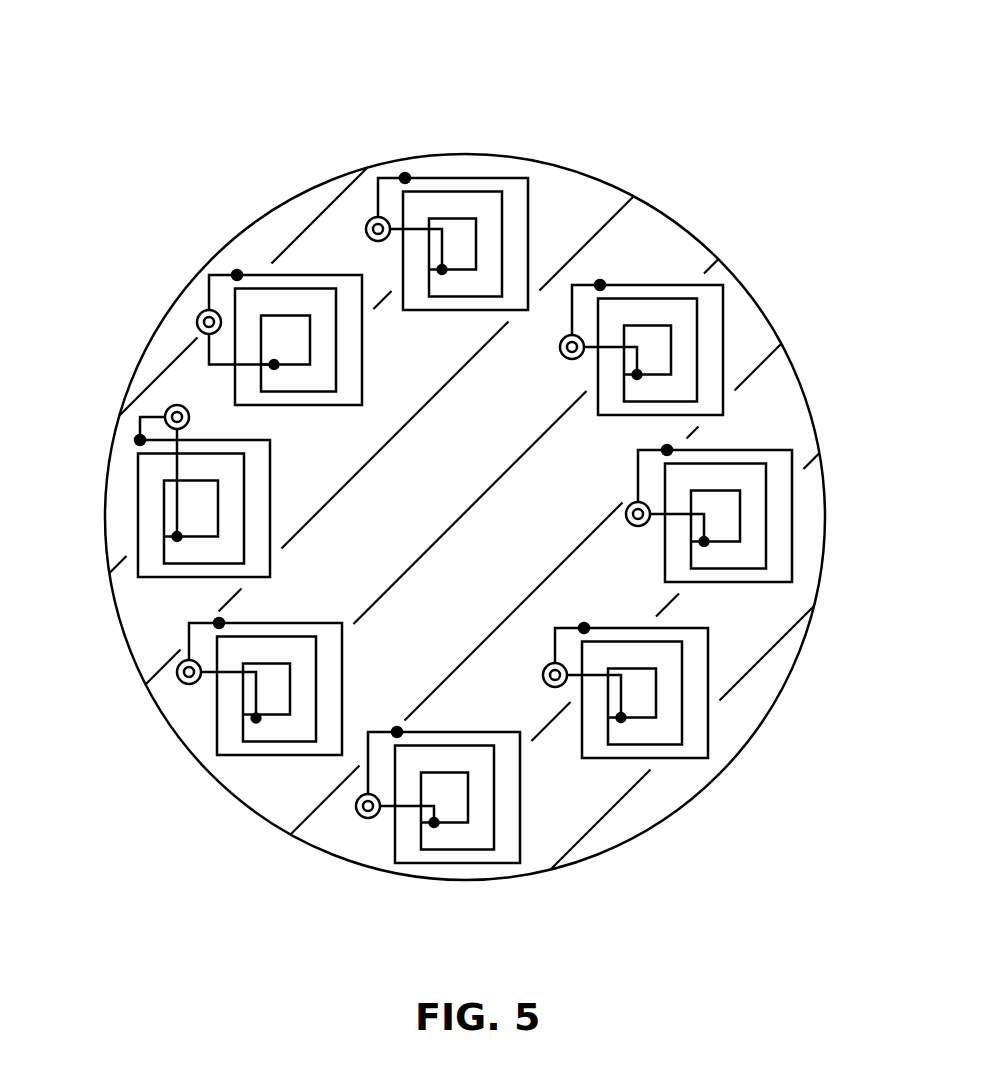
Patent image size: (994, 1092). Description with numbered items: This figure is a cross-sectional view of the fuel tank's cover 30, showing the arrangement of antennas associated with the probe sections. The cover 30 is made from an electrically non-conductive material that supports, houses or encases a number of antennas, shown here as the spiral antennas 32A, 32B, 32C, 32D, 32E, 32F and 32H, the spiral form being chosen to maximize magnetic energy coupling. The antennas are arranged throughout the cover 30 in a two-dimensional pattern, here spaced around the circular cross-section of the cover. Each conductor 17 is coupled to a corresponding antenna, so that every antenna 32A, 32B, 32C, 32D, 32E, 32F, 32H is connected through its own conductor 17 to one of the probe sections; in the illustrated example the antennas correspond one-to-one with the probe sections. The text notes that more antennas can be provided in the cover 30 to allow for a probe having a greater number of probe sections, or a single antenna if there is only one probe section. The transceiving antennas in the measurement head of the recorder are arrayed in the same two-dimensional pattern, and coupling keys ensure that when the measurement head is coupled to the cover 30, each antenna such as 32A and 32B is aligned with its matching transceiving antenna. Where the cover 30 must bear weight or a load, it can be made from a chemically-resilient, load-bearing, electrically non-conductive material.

The cover 30 is at (462, 152).
The conductor 17 is at (365, 218).
The antenna 32A is at (530, 188).
The antenna 32B is at (723, 337).
The antenna 32C is at (792, 505).
The antenna 32D is at (708, 683).
The antenna 32E is at (395, 833).
The antenna 32F is at (217, 693).
The antenna 32H is at (275, 273).